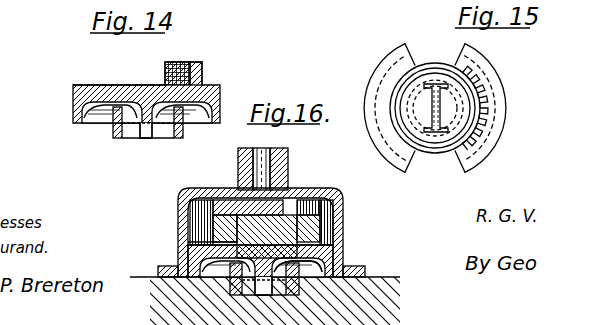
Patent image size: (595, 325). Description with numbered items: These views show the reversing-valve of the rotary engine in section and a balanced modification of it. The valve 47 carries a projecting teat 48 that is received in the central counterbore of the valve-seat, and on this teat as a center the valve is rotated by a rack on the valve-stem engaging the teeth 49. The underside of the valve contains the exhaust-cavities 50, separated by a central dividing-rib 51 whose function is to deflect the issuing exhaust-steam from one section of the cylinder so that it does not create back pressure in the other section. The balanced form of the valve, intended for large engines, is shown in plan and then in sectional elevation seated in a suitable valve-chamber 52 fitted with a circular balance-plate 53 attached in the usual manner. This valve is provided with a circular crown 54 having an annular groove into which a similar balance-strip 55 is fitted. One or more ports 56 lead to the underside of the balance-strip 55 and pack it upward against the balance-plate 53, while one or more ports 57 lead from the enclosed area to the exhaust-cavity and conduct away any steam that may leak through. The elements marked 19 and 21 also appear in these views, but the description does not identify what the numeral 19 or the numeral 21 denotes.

In FIG. 16, the shaft 19 is at (238, 167).
In FIG. 14, the plate 21 is at (146, 92).
In FIG. 15, the plate 21 is at (435, 96).
In FIG. 16, the plate 21 is at (260, 261).
In FIG. 14, the valve 47 is at (95, 88).
In FIG. 14, the teat 48 is at (113, 132).
In FIG. 16, the teat 48 is at (232, 282).
In FIG. 14, the teeth 49 is at (203, 72).
In FIG. 15, the teeth 49 is at (482, 112).
In FIG. 14, the exhaust-cavities 50 is at (84, 114).
In FIG. 16, the exhaust-cavities 50 is at (308, 268).
In FIG. 14, the central dividing-rib 51 is at (152, 138).
In FIG. 16, the central dividing-rib 51 is at (262, 290).
In FIG. 16, the valve-chamber 52 is at (186, 202).
In FIG. 16, the balance-plate 53 is at (318, 207).
In FIG. 15, the circular crown 54 is at (437, 154).
In FIG. 16, the circular crown 54 is at (262, 218).
In FIG. 15, the balance-strip 55 is at (470, 88).
In FIG. 16, the balance-strip 55 is at (200, 222).
In FIG. 16, the ports 56 is at (222, 230).
In FIG. 15, the ports 57 is at (412, 108).
In FIG. 16, the ports 57 is at (196, 247).